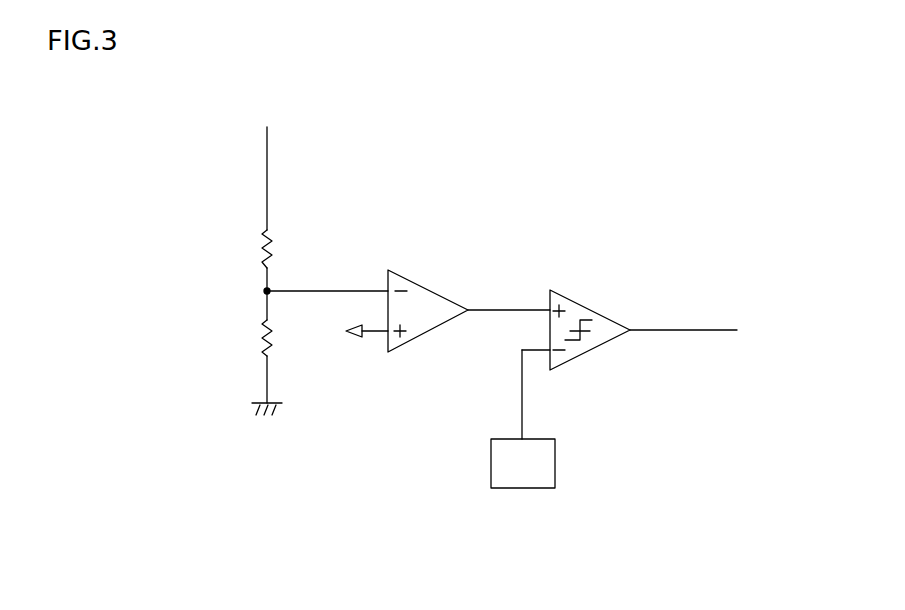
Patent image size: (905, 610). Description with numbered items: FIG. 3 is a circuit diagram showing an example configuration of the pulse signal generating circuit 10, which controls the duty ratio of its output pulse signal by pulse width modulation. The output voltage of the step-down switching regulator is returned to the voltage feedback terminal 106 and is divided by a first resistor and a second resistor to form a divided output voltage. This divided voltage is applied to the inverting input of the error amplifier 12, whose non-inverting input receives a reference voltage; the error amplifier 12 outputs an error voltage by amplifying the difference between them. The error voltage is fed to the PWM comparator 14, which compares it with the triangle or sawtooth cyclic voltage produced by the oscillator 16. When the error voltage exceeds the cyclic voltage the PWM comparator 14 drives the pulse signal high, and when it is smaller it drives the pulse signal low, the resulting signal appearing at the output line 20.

The pulse signal generating circuit 10 is at (515, 571).
The voltage feedback terminal 106 is at (281, 122).
The error amplifier 12 is at (414, 283).
The PWM comparator 14 is at (578, 301).
The oscillator 16 is at (555, 463).
The output signal line (SIG10) 20 is at (742, 320).